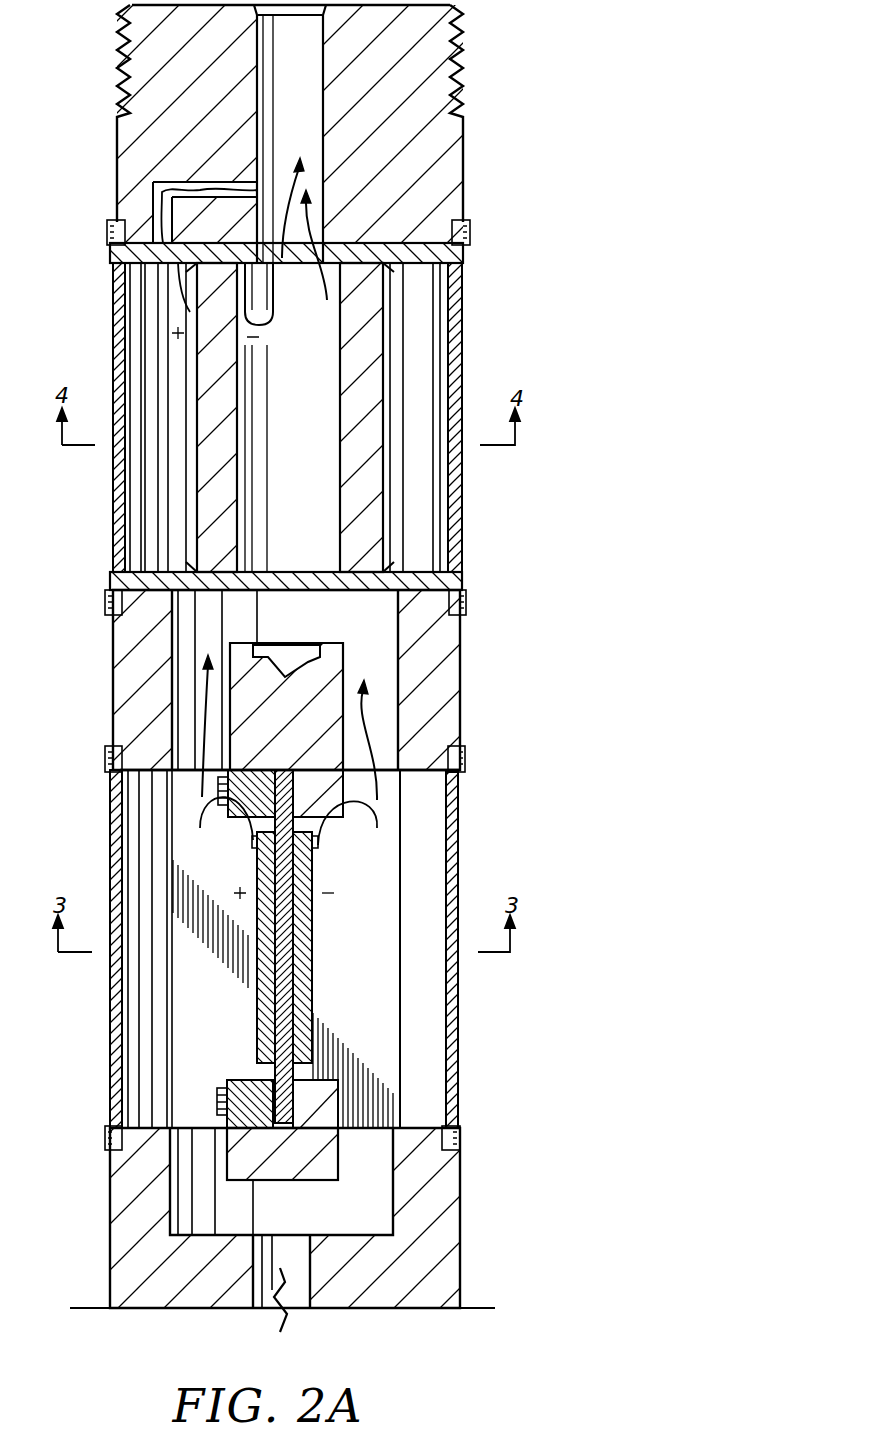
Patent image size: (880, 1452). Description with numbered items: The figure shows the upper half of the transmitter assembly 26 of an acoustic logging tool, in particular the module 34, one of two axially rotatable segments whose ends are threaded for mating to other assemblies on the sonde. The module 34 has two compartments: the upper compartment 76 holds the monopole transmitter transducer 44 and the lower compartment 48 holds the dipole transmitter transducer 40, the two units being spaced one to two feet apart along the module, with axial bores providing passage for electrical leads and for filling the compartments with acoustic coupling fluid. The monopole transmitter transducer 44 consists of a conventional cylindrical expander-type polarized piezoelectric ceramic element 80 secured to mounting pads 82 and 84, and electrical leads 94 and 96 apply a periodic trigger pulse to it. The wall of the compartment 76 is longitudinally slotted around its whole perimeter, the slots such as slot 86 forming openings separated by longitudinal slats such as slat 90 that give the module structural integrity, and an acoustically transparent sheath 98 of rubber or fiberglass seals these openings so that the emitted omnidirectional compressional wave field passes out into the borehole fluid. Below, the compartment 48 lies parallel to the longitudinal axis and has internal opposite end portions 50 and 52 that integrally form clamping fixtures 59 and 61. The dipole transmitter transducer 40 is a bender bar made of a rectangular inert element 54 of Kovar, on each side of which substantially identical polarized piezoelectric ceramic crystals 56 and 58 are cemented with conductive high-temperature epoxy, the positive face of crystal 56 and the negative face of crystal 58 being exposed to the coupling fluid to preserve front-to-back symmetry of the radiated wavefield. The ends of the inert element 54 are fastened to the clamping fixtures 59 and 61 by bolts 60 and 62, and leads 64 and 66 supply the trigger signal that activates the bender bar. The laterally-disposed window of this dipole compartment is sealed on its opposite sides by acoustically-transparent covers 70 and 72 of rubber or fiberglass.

The module 34 is at (464, 167).
The acoustically transparent sheath 98 is at (464, 332).
The compartment 76 is at (447, 355).
The monopole transmitter transducer 44 is at (413, 503).
The slat 90 is at (178, 512).
The slot 86 is at (176, 368).
The electrical lead 94 is at (150, 290).
The cylindrical expander-type polarized piezoelectric ceramic element 80 is at (358, 428).
The electrical lead 96 is at (274, 328).
The mounting pad 84 is at (327, 566).
The mounting pad 82 is at (334, 272).
The transmitter assembly 26 is at (506, 683).
The internal opposite end portion 50 is at (426, 772).
The cover 70 is at (113, 1066).
The compartment 48 is at (143, 845).
The cover 72 is at (456, 1053).
The bolt 62 is at (225, 812).
The clamping fixture 61 is at (343, 814).
The lead 64 is at (240, 843).
The lead 66 is at (350, 843).
The dipole transmitter transducer 40 is at (288, 946).
The inert element 54 is at (290, 982).
The polarized piezoelectric ceramic crystal 56 is at (256, 1034).
The polarized piezoelectric ceramic crystal 58 is at (312, 950).
The bolt 60 is at (217, 1100).
The clamping fixture 59 is at (345, 1042).
The internal opposite end portion 52 is at (416, 1124).